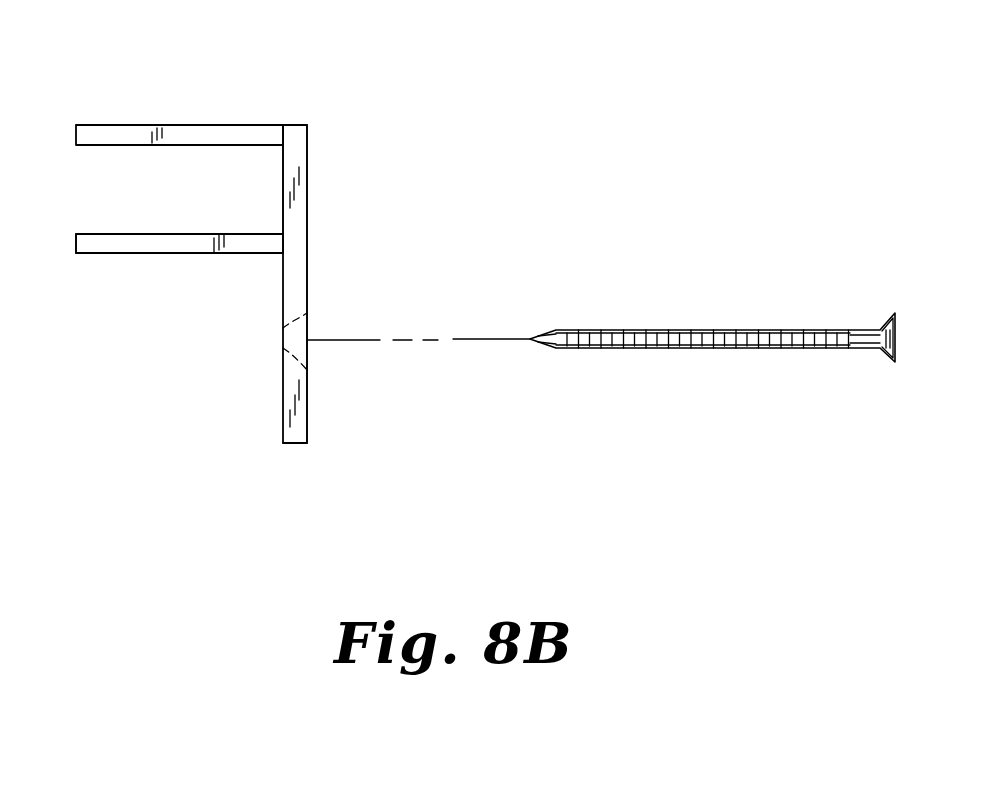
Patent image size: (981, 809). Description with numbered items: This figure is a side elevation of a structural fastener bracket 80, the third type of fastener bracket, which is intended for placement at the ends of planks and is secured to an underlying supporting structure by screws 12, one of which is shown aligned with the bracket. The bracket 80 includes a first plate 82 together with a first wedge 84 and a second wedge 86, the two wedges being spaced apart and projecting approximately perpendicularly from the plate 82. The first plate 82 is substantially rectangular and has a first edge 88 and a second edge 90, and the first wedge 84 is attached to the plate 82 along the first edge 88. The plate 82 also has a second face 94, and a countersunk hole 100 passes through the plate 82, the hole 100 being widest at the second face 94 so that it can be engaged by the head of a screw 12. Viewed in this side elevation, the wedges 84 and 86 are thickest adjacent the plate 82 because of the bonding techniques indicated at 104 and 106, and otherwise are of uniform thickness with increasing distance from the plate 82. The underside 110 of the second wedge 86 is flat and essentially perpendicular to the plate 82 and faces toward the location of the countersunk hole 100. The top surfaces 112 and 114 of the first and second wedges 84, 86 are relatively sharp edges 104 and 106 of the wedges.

The screw 12 is at (742, 330).
The structural fastener bracket 80 is at (355, 140).
The first plate 82 is at (297, 238).
The first wedge 84 is at (202, 106).
The second wedge 86 is at (215, 270).
The first edge 88 is at (308, 123).
The second edge 90 is at (307, 443).
The second face 94 is at (308, 195).
The countersunk hole 100 is at (307, 313).
The bonding technique 104 is at (76, 133).
The bonding technique 106 is at (76, 243).
The underside of second wedge 110 is at (153, 253).
The top surface of first wedge 112 is at (137, 125).
The top surface of second wedge 114 is at (110, 234).